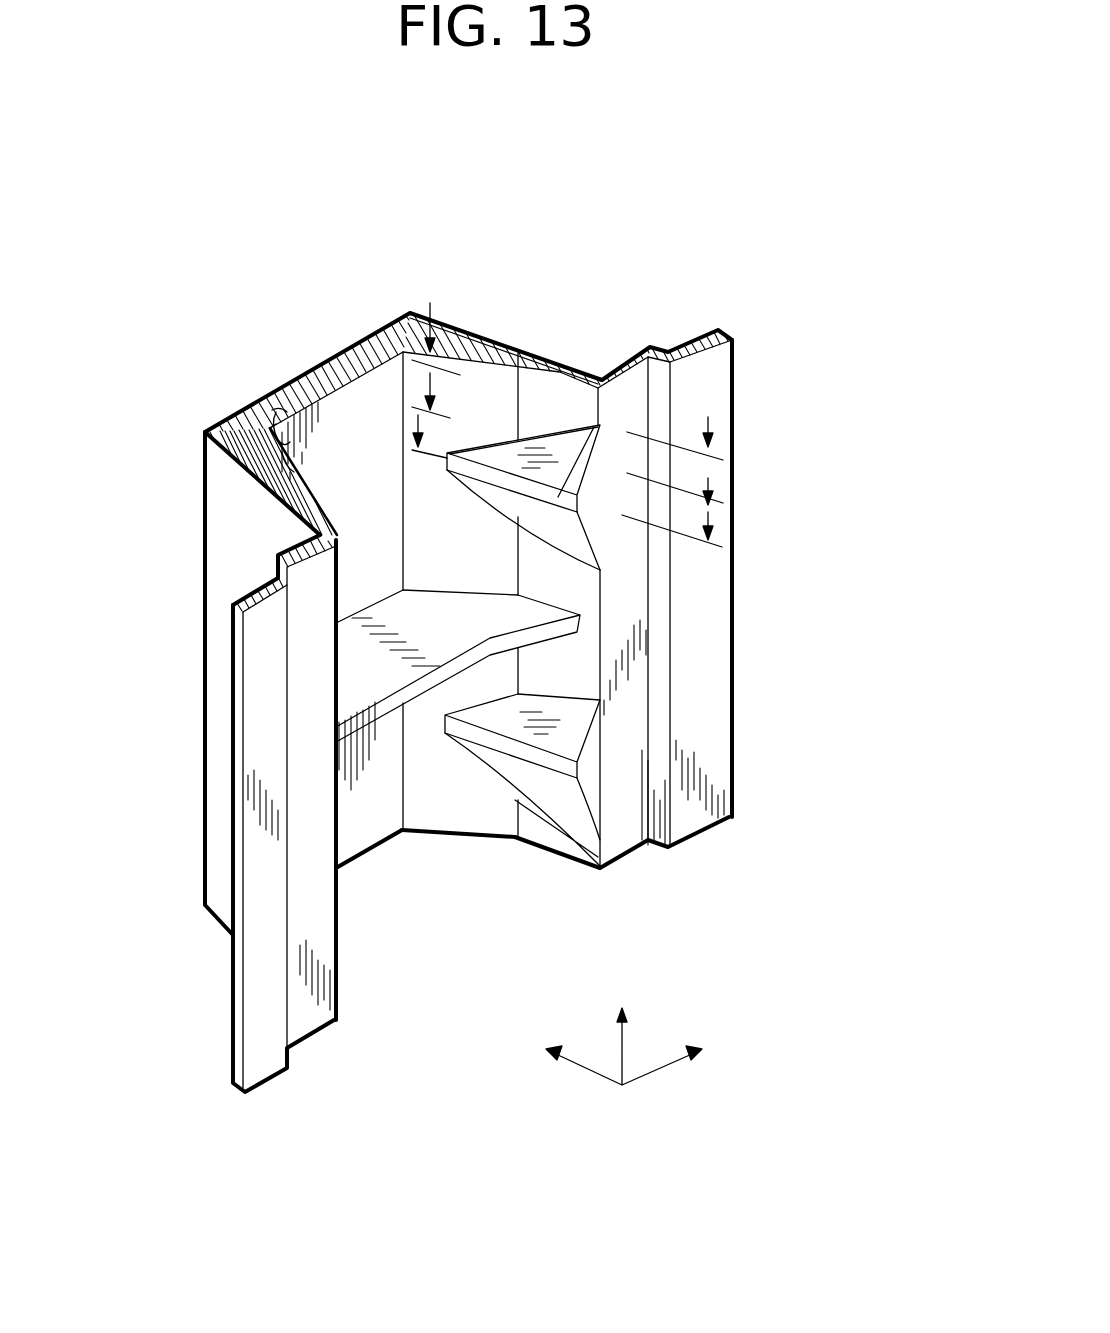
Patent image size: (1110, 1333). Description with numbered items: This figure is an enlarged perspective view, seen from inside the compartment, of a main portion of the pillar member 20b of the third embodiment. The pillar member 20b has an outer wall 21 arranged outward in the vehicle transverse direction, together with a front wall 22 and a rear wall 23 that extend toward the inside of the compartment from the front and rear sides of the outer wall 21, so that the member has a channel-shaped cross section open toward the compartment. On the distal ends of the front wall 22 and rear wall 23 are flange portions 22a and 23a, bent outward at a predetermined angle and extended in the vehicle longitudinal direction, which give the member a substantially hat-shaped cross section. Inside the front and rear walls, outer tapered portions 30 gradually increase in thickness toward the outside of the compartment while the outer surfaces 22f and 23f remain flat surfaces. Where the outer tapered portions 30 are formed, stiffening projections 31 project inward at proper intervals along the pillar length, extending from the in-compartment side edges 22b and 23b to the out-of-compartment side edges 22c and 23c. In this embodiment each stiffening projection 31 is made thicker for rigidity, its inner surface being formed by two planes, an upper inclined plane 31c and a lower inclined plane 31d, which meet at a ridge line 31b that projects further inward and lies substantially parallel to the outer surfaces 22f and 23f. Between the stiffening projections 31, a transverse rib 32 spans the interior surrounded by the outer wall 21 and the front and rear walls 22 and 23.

The pillar member 20b is at (672, 292).
The outer wall 21 is at (293, 402).
The front wall 22 is at (508, 350).
The flange portion 22a is at (712, 752).
The edge 22b is at (606, 815).
The edge 22c is at (403, 756).
The outer surface 22f is at (477, 357).
The rear wall 23 is at (220, 598).
The flange portion 23a is at (262, 1073).
The edge 23b is at (309, 1020).
The edge 23c is at (282, 408).
The outer surface 23f is at (220, 556).
The outer tapered portion 30 is at (470, 363).
The stiffening projection 31 is at (539, 808).
The ridge line 31b is at (558, 496).
The inclined plane 31c is at (527, 455).
The inclined plane 31d is at (560, 530).
The transverse rib 32 is at (345, 682).